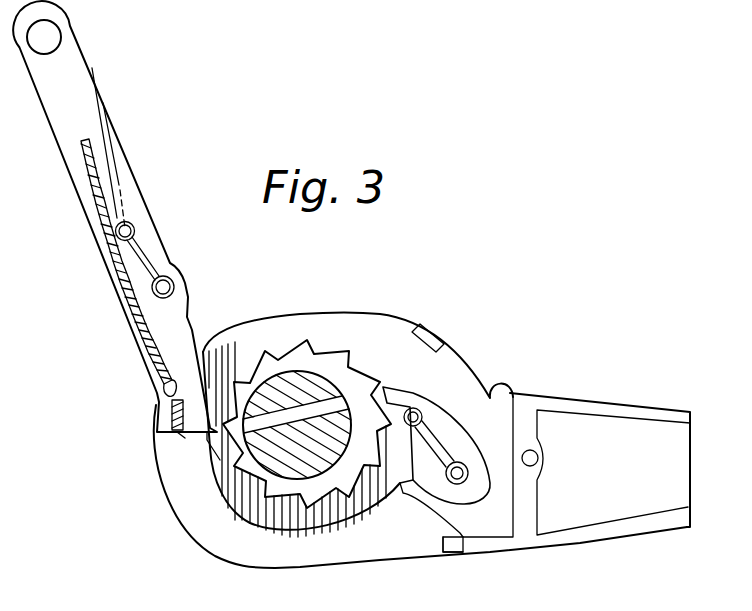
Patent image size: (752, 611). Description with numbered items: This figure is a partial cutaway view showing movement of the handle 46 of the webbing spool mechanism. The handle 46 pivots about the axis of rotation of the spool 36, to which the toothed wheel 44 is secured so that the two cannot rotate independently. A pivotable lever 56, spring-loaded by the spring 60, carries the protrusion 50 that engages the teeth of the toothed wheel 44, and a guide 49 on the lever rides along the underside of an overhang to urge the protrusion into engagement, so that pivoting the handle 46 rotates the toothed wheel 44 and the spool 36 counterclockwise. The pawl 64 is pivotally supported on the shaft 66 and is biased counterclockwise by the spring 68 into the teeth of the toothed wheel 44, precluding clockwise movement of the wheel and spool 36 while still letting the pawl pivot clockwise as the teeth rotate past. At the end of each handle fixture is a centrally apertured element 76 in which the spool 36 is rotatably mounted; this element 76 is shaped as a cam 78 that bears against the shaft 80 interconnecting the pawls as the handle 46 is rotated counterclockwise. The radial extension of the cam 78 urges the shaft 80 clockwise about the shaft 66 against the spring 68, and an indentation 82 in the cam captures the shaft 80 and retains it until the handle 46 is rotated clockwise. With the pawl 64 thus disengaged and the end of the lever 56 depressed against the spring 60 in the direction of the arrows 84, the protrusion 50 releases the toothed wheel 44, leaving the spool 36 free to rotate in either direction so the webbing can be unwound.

The spool 36 is at (255, 365).
The toothed wheel 44 is at (333, 357).
The handle 46 is at (116, 100).
The guide 49 is at (185, 433).
The protrusion 50 is at (198, 452).
The pivotable lever 56 is at (100, 200).
The spring 60 is at (140, 252).
The pawl 64 is at (490, 381).
The shaft 66 is at (490, 483).
The spring 68 is at (462, 437).
The element 76 is at (253, 358).
The cam 78 is at (403, 493).
The shaft 80 is at (418, 408).
The indentation 82 is at (463, 552).
The arrows 84 is at (100, 153).